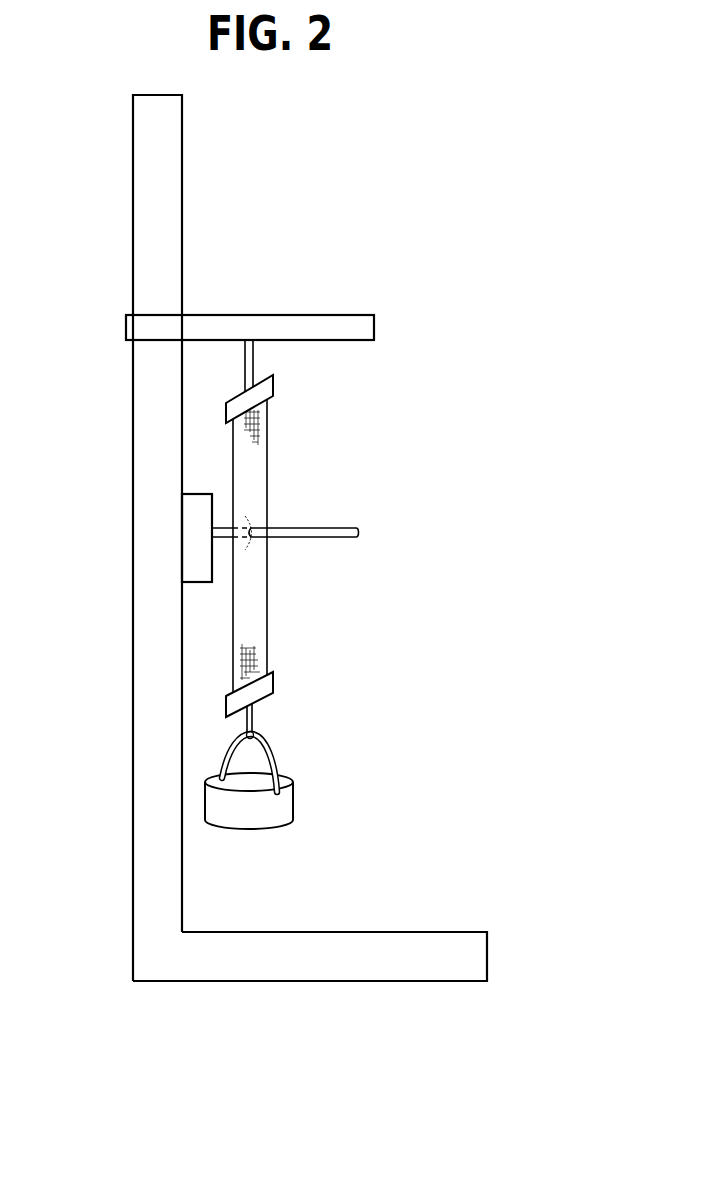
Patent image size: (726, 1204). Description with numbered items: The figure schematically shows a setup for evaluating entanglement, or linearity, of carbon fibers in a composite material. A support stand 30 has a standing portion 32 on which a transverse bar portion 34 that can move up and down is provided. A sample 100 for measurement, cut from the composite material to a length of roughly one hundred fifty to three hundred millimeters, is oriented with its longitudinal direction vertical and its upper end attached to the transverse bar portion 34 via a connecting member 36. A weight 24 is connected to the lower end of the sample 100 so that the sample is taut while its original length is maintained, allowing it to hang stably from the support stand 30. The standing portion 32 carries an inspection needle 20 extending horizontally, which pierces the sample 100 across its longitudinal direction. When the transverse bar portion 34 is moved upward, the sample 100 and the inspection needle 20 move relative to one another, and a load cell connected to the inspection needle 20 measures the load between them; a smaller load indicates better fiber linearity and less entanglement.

The inspection needle 20 is at (305, 530).
The weight 24 is at (283, 801).
The support stand 30 is at (300, 986).
The standing portion 32 is at (148, 485).
The transverse bar portion 34 is at (348, 325).
The connecting member 36 is at (255, 357).
The sample for measurement 100 is at (267, 612).